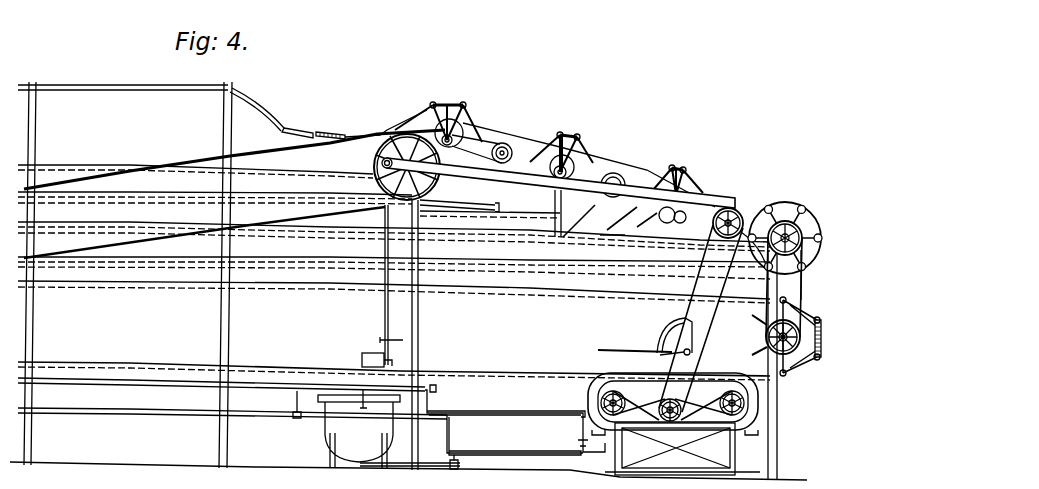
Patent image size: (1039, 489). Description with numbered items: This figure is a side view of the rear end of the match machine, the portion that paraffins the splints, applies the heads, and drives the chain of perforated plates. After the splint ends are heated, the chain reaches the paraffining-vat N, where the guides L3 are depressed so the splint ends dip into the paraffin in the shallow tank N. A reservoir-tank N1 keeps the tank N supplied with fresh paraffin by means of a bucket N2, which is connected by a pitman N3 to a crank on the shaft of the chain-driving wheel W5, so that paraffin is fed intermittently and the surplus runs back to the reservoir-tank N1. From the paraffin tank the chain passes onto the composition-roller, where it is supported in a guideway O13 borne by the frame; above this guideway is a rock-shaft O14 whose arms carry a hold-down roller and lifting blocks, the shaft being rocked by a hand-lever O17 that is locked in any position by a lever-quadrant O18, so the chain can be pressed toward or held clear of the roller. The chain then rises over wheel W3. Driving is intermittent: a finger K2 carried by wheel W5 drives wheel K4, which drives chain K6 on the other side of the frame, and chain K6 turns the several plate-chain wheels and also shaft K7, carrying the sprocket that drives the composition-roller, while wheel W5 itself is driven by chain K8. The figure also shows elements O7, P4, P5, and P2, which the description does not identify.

The chain K8 is at (266, 158).
The chain-driving wheel W5 is at (372, 166).
The finger K2 is at (538, 193).
The chain K6 is at (630, 166).
The shaft K7 is at (734, 211).
The wheel K4 is at (804, 207).
The wheel W3 is at (756, 326).
The pulley O7 is at (705, 358).
The guideway O13 is at (643, 374).
The hand-lever O17 is at (635, 342).
The lever-quadrant O18 is at (673, 329).
The rock-shaft O14 is at (688, 348).
The pipe P4 is at (515, 418).
The pipe P5 is at (300, 431).
The pipe P2 is at (598, 445).
The pitman N3 is at (383, 318).
The bucket N2 is at (393, 360).
The paraffining-vat N is at (313, 380).
The guides L3 is at (285, 368).
The reservoir-tank N1 is at (345, 435).